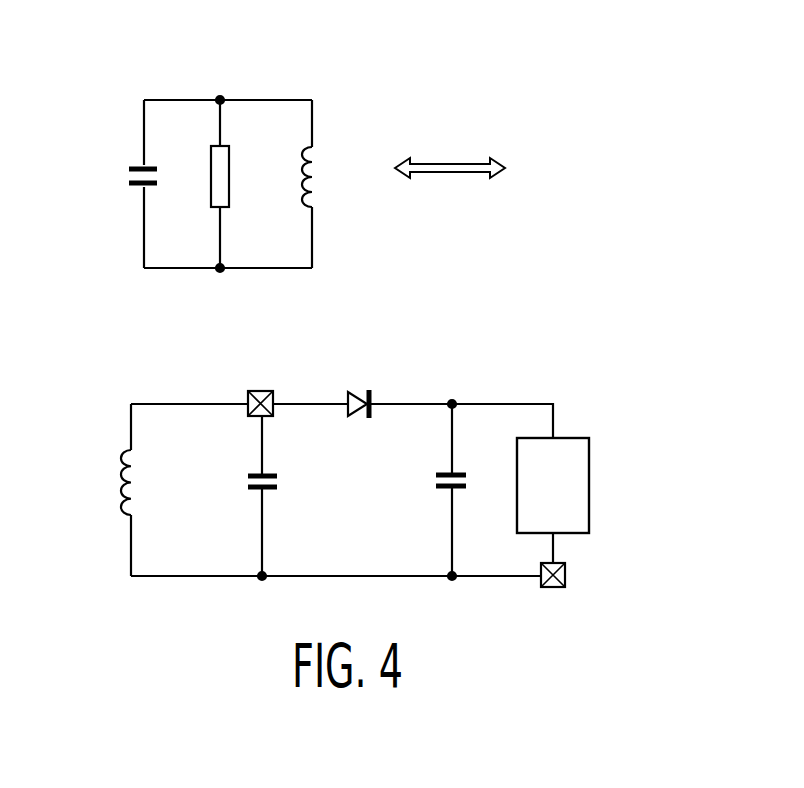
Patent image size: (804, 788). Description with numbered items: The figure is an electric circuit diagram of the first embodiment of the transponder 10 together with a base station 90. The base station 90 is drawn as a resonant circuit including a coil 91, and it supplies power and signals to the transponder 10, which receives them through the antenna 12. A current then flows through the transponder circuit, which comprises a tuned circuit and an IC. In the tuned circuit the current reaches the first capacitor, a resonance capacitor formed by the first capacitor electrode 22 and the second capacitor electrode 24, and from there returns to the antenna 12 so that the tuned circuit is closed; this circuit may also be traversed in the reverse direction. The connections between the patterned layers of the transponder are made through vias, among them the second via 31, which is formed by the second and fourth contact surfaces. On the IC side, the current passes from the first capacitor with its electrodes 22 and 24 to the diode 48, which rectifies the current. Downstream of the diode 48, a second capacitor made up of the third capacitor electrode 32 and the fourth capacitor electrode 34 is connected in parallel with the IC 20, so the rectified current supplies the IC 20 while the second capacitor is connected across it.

The base station 90 is at (114, 148).
The coil 91 is at (306, 158).
The transponder 10 is at (596, 352).
The antenna 12 is at (121, 492).
The first capacitor electrode 22 is at (250, 488).
The second capacitor electrode 24 is at (250, 475).
The diode 48 is at (358, 388).
The third capacitor electrode 32 is at (438, 487).
The fourth capacitor electrode 34 is at (438, 474).
The IC 20 is at (590, 487).
The second via 31 is at (567, 575).